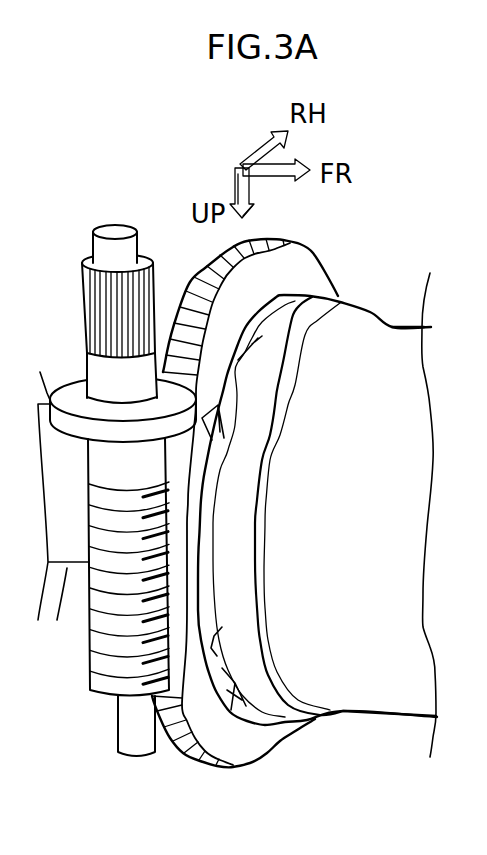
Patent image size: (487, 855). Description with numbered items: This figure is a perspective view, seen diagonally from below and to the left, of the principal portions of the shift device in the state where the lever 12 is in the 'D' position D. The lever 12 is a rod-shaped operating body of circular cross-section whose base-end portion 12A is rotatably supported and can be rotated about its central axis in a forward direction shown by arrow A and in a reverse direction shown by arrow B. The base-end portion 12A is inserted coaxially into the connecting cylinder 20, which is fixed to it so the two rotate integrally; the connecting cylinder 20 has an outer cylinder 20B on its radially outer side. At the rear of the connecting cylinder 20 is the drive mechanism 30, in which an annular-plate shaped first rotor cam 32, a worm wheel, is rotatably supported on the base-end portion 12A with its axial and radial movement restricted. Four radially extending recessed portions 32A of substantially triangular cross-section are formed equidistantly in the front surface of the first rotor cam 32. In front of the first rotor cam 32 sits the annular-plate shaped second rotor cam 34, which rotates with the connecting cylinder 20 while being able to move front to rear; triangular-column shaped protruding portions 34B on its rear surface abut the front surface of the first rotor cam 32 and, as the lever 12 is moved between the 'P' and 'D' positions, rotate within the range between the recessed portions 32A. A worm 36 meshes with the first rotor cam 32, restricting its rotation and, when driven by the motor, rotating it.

The lever 12 is at (54, 527).
The base-end portion 12A is at (54, 527).
The connecting cylinder 20 is at (391, 506).
The outer cylinder 20B is at (387, 717).
The drive mechanism 30 is at (104, 510).
The first rotor cam 32 is at (248, 481).
The recessed portions 32A is at (222, 428).
The second rotor cam 34 is at (317, 475).
The protruding portions 34B is at (250, 347).
The worm 36 is at (91, 663).
The arrow A is at (308, 557).
The arrow B is at (311, 501).
The 'D' position D is at (340, 258).